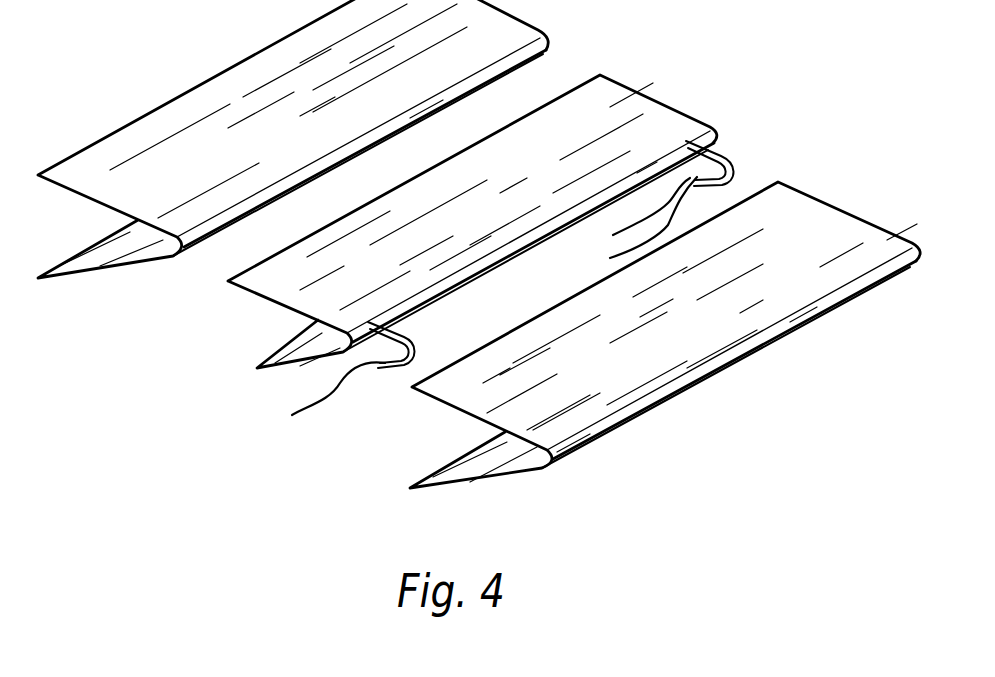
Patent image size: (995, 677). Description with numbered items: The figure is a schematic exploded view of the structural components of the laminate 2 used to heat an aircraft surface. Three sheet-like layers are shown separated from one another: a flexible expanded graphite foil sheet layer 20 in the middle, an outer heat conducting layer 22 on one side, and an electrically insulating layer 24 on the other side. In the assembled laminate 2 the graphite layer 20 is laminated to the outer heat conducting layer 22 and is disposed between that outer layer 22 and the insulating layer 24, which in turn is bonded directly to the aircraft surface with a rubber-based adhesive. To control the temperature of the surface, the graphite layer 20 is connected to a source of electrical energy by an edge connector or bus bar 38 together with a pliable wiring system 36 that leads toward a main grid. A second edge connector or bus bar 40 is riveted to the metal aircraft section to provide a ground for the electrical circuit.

The panel assembly 2 is at (742, 46).
The flexible expanded graphite foil sheet layer 20 is at (623, 107).
The outer heat conducting layer 22 is at (722, 338).
The electrically insulating layer 24 is at (238, 77).
The wiring system 36 is at (610, 258).
The edge connector or bus bar 38 is at (743, 158).
The edge connector or bus bar 40 is at (388, 378).